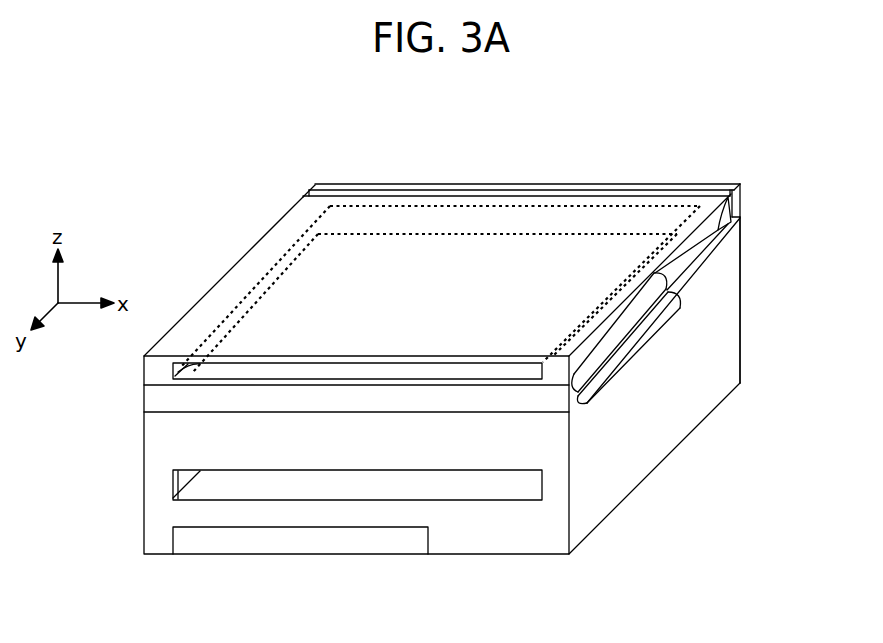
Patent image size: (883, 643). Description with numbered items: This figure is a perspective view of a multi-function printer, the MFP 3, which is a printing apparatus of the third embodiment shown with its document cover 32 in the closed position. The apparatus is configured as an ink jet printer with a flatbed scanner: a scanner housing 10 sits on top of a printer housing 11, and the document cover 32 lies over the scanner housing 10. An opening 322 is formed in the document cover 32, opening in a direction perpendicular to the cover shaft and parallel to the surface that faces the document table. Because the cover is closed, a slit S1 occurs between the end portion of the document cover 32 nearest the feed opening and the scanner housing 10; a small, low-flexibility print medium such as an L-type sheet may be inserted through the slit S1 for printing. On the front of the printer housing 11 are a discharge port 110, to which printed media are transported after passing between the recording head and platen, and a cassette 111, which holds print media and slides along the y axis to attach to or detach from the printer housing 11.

The MFP 3 is at (214, 197).
The slit S1 is at (312, 191).
The document cover 32 is at (705, 186).
The scanner housing 10 is at (736, 228).
The printer housing 11 is at (736, 285).
The opening 322 is at (173, 373).
The discharge port 110 is at (173, 485).
The cassette 111 is at (193, 533).